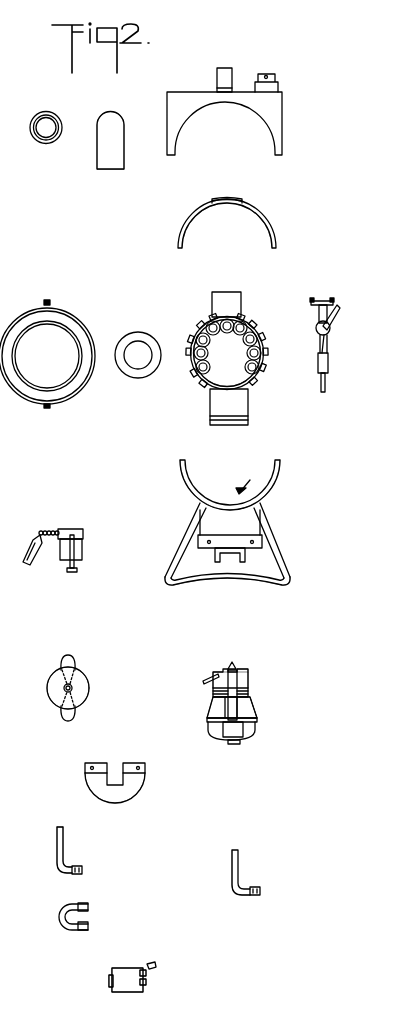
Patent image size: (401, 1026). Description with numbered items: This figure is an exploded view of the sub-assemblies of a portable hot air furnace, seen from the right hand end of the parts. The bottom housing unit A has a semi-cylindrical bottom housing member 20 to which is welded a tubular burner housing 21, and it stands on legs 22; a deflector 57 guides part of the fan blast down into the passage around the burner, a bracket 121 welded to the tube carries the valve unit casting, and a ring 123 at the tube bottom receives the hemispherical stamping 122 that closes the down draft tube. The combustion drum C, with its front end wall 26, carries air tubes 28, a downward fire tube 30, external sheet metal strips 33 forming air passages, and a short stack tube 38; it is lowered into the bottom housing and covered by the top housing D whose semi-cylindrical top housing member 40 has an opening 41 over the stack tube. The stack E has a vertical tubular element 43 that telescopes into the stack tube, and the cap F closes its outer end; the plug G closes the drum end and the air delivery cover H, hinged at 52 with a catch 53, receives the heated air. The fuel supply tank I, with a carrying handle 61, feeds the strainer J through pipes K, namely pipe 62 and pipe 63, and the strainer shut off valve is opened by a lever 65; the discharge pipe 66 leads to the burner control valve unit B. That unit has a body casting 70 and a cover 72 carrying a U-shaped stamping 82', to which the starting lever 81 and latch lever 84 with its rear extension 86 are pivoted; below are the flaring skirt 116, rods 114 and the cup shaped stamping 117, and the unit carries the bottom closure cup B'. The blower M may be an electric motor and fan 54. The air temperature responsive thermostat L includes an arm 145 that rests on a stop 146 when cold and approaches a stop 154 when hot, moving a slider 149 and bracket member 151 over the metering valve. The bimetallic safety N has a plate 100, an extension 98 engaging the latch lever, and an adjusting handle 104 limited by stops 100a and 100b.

The cap F is at (58, 117).
The stack E is at (107, 118).
The vertical tubular element 43 is at (105, 140).
The fuel supply tank I is at (173, 95).
The handle 61 is at (228, 71).
The top housing D is at (190, 218).
The opening 41 is at (228, 198).
The top housing member 40 is at (250, 212).
The air delivery cover H is at (72, 312).
The catch 53 is at (55, 291).
The hinge 52 is at (47, 409).
The plug G is at (130, 338).
The combustion drum C is at (197, 324).
The air tubes 28 is at (239, 335).
The stack tube 38 is at (226, 298).
The sheet metal strips 33 is at (257, 322).
The end wall 26 is at (220, 378).
The fire tube 30 is at (238, 403).
The air temperature responsive thermostat L is at (323, 301).
The stop 154 is at (313, 299).
The stop 146 is at (332, 300).
The arm 145 is at (338, 310).
The slider 149 is at (328, 341).
The bracket member 151 is at (327, 385).
The bottom housing unit A is at (195, 521).
The bottom housing member 20 is at (279, 470).
The deflector 57 is at (247, 477).
The tubular burner housing 21 is at (247, 526).
The ring 123 is at (262, 542).
The bracket 121 is at (245, 562).
The legs 22 is at (182, 585).
The strainer J is at (70, 529).
The lever 65 is at (34, 545).
The blower M is at (53, 697).
The electric motor and fan 54 is at (83, 684).
The burner control valve unit B is at (247, 695).
The rods 114 is at (232, 664).
The U-shaped stamping 82' is at (218, 667).
The latch lever 84 is at (207, 680).
The rear extension 86 is at (241, 677).
The cover 72 is at (213, 693).
The starting lever 81 is at (232, 713).
The skirt 116 is at (257, 712).
The body casting 70 is at (212, 725).
The cup shaped stamping 117 is at (246, 737).
The bottom closure cup B' is at (132, 774).
The hemispherical stamping 122 is at (133, 792).
The pipes K is at (232, 880).
The pipe 62 is at (60, 856).
The discharge pipe 66 is at (80, 903).
The pipe 63 is at (240, 873).
The bimetallic safety N is at (125, 993).
The plate 100 is at (130, 970).
The handle 104 is at (156, 965).
The stop 100a is at (147, 973).
The stop 100b is at (146, 990).
The extension 98 is at (112, 985).